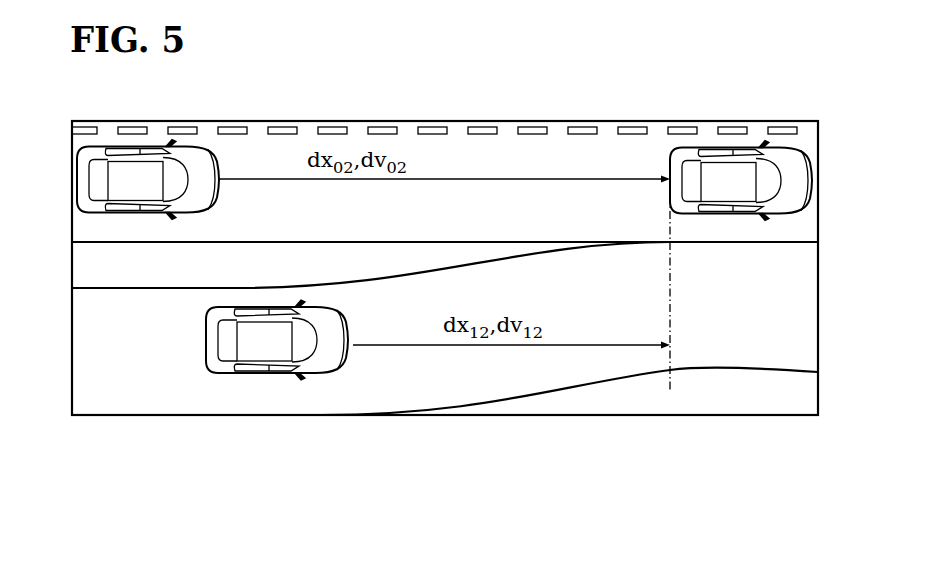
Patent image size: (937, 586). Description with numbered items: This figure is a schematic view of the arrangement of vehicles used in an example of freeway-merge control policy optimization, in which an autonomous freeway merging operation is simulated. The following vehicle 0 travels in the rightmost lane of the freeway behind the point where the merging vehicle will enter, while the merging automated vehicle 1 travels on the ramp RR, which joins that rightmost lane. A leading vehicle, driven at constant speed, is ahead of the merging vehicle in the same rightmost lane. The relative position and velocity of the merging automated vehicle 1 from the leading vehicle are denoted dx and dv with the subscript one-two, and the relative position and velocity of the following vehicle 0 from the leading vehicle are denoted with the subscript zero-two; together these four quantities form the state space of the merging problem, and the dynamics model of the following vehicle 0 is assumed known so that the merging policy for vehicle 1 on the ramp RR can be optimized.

The following vehicle 0 is at (90, 182).
The merging automated vehicle 1 is at (277, 368).
The ramp RR is at (425, 375).